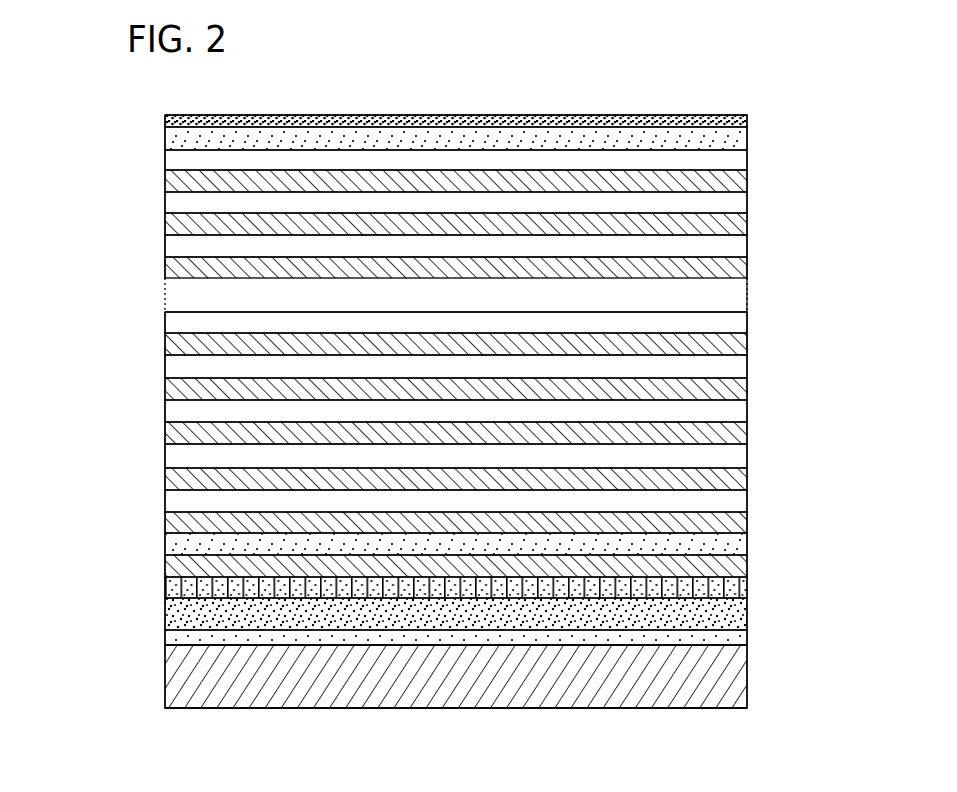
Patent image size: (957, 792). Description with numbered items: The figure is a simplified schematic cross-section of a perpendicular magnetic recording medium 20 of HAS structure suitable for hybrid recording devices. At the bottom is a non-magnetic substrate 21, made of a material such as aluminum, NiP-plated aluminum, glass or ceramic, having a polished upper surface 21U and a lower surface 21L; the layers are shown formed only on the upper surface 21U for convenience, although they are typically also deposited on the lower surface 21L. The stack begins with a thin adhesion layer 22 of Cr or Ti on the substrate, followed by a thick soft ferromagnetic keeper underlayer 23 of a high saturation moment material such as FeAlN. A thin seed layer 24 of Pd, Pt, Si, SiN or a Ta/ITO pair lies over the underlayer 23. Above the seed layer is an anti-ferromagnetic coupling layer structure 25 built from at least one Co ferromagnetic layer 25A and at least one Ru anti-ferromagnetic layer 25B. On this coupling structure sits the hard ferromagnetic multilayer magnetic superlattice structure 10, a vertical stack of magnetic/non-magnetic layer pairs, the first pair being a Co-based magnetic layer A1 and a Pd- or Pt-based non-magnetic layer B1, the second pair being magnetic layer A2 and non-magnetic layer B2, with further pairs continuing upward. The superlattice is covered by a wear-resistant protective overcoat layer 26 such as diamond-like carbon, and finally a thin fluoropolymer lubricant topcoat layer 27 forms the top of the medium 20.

The perpendicular magnetic recording medium 20 is at (783, 82).
The lubricant topcoat layer 27 is at (752, 118).
The protective overcoat layer 26 is at (752, 138).
The multilayer magnetic superlattice structure 10 is at (480, 342).
The non-magnetic layer of second layer pair B2 is at (752, 454).
The magnetic layer of second layer pair A2 is at (752, 475).
The non-magnetic layer of first layer pair B1 is at (752, 498).
The magnetic layer of first layer pair A1 is at (752, 518).
The anti-ferromagnetic coupling layer structure 25 is at (461, 562).
The anti-ferromagnetic layer 25B is at (752, 540).
The ferromagnetic layer 25A is at (752, 563).
The seed layer 24 is at (752, 584).
The keeper underlayer 23 is at (752, 612).
The adhesion layer 22 is at (752, 633).
The non-magnetic substrate 21 is at (752, 676).
The upper surface of substrate 21U is at (165, 645).
The lower surface of substrate 21L is at (165, 710).